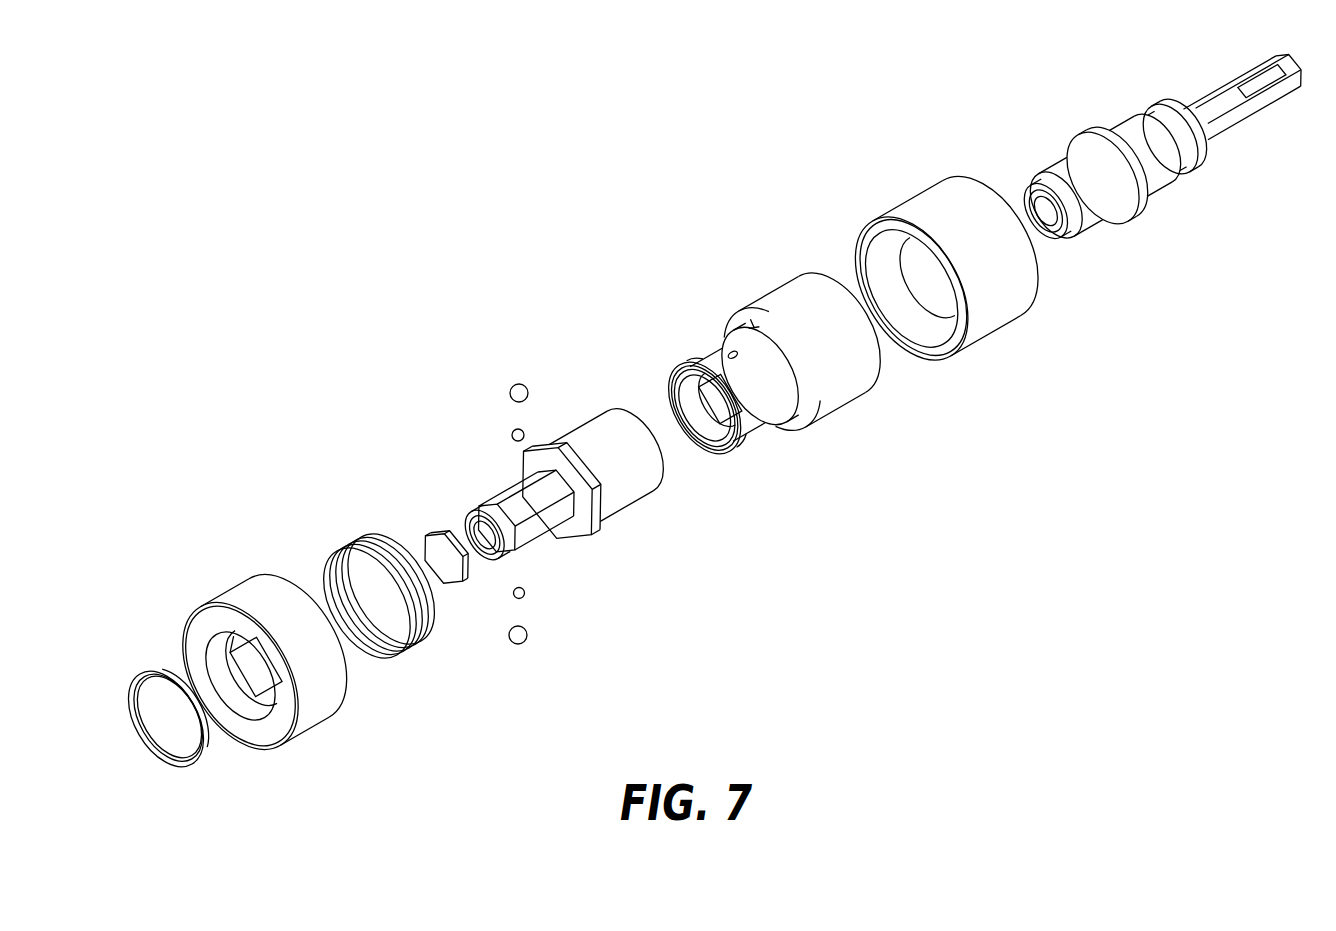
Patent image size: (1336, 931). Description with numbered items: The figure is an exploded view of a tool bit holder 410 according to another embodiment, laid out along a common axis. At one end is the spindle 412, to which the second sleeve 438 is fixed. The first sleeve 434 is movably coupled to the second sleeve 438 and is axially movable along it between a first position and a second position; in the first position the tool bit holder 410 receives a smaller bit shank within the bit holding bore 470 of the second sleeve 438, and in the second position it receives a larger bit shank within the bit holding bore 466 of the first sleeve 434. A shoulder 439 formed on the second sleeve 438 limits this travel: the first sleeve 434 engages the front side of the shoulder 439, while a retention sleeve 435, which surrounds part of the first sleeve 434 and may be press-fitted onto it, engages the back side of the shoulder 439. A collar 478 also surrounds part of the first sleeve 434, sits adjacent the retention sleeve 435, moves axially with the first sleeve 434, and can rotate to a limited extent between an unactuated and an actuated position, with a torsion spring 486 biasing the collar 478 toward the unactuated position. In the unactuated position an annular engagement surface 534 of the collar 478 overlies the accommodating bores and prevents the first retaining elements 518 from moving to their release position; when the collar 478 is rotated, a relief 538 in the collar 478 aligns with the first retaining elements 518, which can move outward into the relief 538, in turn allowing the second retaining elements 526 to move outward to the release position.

The tool bit holder 410 is at (396, 257).
The spindle 412 is at (1117, 138).
The first sleeve 434 is at (777, 389).
The retention sleeve 435 is at (917, 197).
The second sleeve 438 is at (532, 542).
The shoulder 439 is at (592, 507).
The bit holding bore 466 is at (691, 435).
The bit holding bore 470 is at (482, 558).
The collar 478 is at (252, 663).
The spring 486 is at (362, 537).
The first retaining elements 518 is at (528, 638).
The second retaining elements 526 is at (512, 432).
The annular engagement surface 534 is at (238, 705).
The relief 538 is at (227, 673).